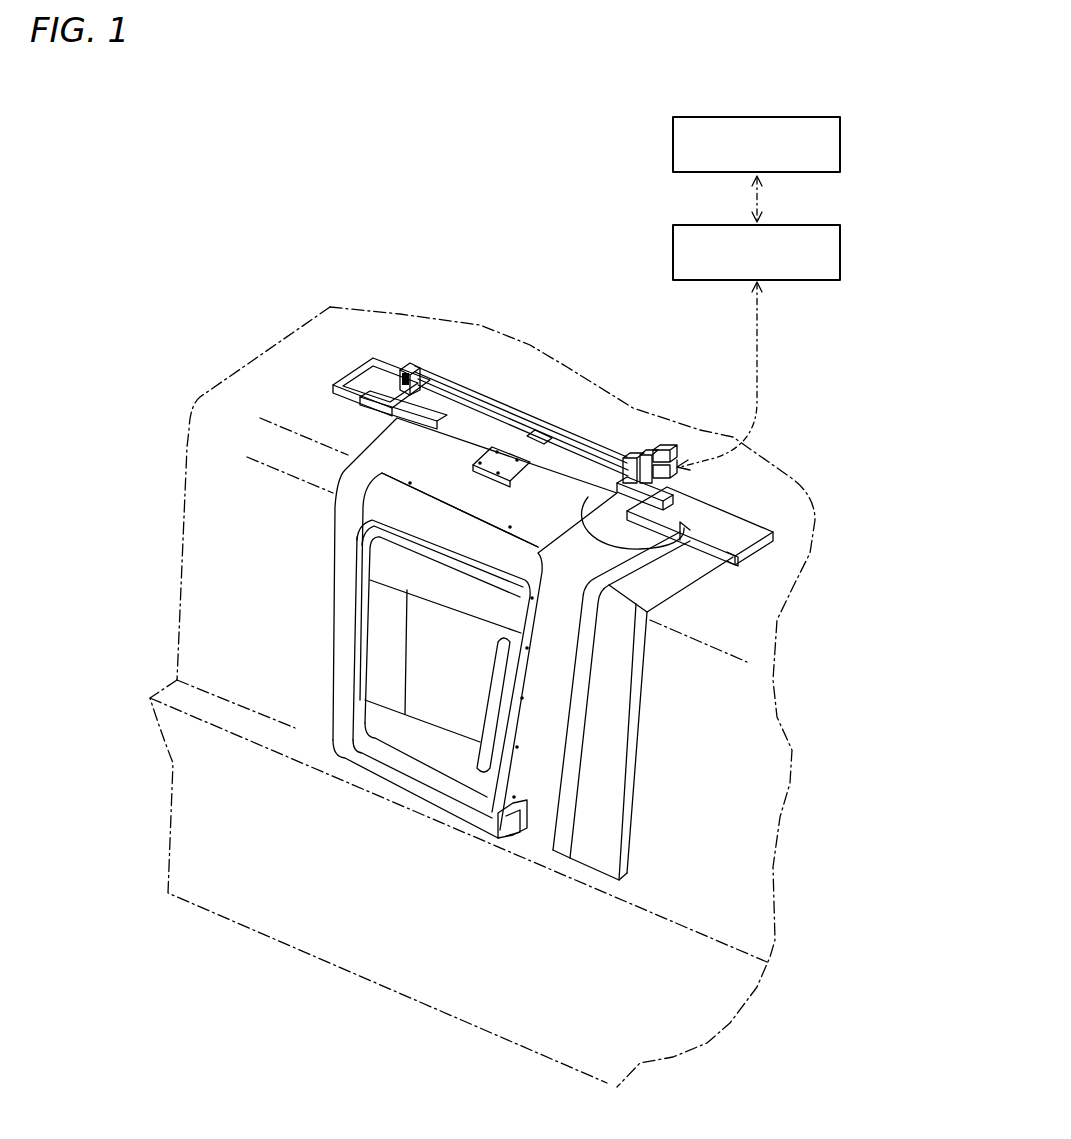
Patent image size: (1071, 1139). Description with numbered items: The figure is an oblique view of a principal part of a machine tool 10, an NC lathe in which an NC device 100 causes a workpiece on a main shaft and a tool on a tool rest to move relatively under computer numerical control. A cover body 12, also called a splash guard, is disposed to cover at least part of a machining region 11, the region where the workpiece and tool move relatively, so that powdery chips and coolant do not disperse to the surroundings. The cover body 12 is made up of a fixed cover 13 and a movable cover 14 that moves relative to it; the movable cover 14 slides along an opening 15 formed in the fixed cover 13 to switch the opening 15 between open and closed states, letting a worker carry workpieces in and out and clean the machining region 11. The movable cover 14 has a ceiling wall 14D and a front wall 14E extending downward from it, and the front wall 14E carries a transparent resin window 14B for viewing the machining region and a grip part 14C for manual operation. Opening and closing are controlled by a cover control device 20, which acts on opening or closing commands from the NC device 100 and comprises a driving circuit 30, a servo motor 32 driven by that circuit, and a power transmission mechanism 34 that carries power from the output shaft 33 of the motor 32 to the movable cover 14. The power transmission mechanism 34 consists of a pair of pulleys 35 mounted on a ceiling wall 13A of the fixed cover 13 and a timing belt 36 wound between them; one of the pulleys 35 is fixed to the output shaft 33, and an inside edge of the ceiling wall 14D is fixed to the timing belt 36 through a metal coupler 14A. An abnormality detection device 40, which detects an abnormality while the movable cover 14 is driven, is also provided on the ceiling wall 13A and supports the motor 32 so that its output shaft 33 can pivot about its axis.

The machine tool 10 is at (258, 312).
The machining region 11 is at (548, 733).
The cover body 12 is at (180, 443).
The fixed cover 13 is at (363, 663).
The ceiling wall of the fixed cover 13A is at (374, 388).
The movable cover 14 is at (401, 663).
The metal coupler 14A is at (530, 455).
The transparent window 14B is at (437, 690).
The grip part 14C is at (485, 695).
The ceiling wall of the movable cover 14D is at (455, 448).
The front wall 14E is at (342, 722).
The opening 15 is at (553, 683).
The cover control device 20 is at (843, 250).
The driving circuit 30 is at (811, 323).
The servo motor 32 is at (657, 467).
The output shaft 33 is at (737, 553).
The power transmission mechanism 34 is at (545, 373).
The pulleys 35 is at (413, 370).
The timing belt 36 is at (520, 452).
The abnormality detection device 40 is at (618, 440).
The NC device 100 is at (843, 148).